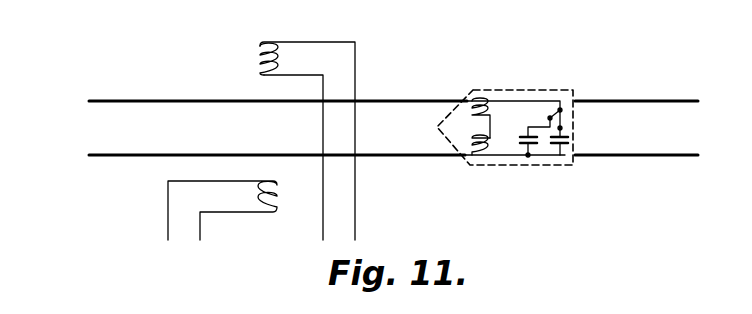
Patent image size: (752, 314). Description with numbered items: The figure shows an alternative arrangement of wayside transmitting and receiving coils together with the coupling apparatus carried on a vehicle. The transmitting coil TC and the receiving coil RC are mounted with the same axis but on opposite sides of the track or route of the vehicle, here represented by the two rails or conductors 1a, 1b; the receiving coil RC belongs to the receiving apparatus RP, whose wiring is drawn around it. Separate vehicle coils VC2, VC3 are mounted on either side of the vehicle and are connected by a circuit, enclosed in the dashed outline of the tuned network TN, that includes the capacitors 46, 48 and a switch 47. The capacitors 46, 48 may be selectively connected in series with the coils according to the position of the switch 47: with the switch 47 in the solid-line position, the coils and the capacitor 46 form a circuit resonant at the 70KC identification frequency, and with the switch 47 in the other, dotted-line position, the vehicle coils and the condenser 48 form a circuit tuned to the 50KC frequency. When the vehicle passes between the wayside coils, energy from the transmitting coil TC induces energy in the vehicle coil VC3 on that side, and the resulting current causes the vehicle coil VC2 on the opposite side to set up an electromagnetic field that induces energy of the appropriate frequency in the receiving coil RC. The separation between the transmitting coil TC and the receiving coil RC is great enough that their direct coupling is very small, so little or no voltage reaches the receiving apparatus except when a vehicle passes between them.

The line conductor 1a is at (144, 99).
The line conductor 1b is at (145, 157).
The relay RP is at (304, 128).
The receiving coil RC is at (256, 61).
The transmitting coil TC is at (278, 209).
The tuned network TN is at (486, 90).
The vehicle coil VC2 is at (471, 100).
The vehicle coil VC3 is at (471, 161).
The switch 47 is at (562, 108).
The 50 kc contact 50KC is at (550, 118).
The 70 kc contact 70KC is at (562, 127).
The condenser 48 is at (521, 166).
The capacitor 46 is at (565, 166).